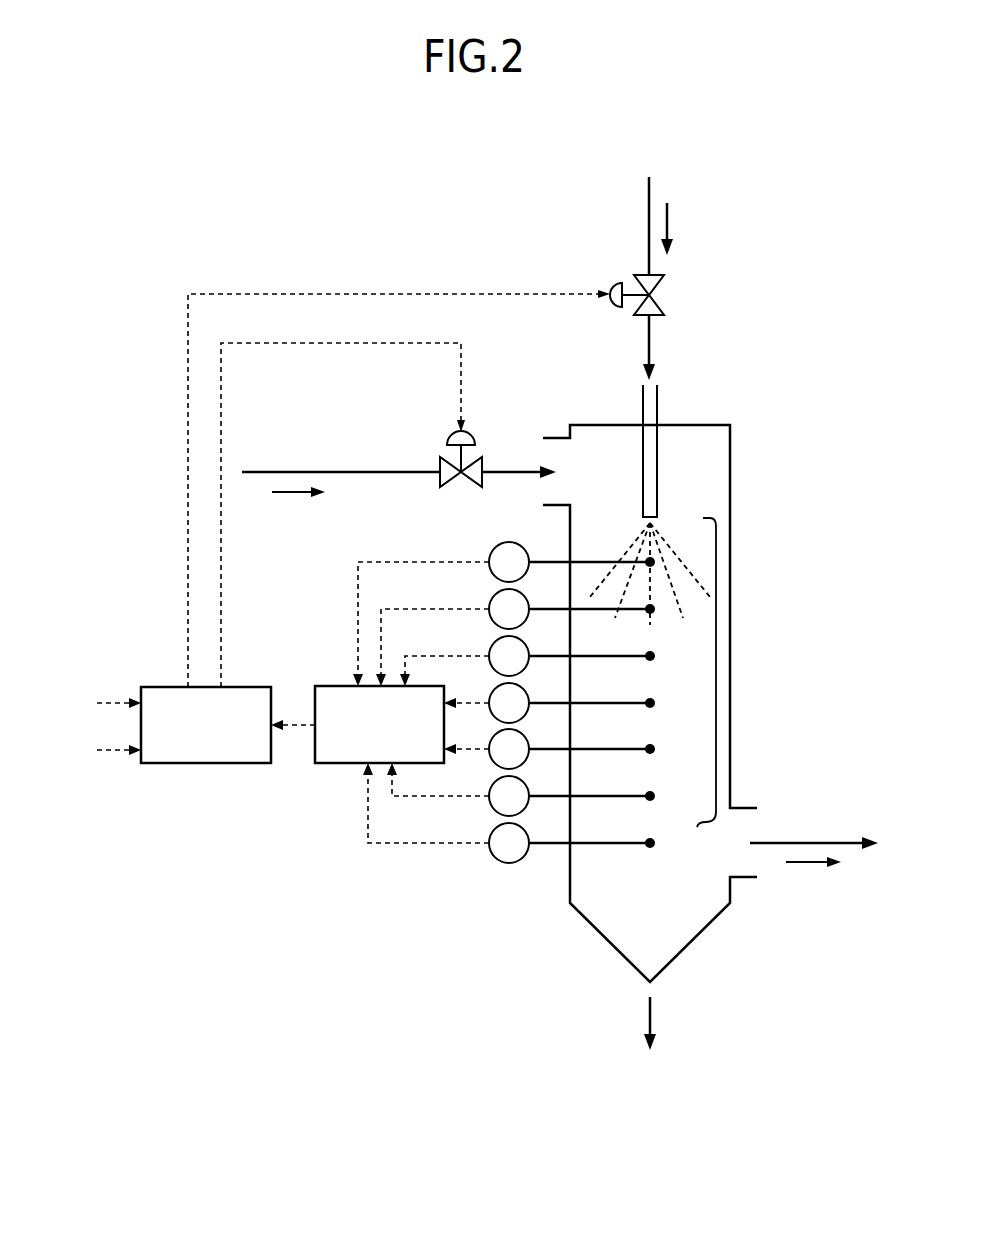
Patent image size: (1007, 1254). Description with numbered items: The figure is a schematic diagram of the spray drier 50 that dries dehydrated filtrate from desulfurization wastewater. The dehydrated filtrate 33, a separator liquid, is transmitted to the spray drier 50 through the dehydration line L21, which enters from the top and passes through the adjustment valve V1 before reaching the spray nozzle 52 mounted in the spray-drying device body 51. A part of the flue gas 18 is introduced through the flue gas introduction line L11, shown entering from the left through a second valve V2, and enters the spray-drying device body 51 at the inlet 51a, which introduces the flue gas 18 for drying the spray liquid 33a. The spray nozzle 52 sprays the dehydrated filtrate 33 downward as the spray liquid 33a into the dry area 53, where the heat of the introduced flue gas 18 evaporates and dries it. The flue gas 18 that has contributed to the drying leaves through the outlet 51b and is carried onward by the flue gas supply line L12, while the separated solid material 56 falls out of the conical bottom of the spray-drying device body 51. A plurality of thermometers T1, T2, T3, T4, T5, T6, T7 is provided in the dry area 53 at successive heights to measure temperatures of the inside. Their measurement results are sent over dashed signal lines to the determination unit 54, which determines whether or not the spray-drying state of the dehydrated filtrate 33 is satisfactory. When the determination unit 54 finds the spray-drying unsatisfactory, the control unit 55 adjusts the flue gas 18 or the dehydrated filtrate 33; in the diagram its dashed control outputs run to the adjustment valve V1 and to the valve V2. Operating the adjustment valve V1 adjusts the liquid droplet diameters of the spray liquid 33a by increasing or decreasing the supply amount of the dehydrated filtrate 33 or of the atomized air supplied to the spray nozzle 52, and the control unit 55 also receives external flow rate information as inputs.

The spray drier 50 is at (466, 234).
The dehydrated filtrate 33 is at (669, 226).
The dehydration line L21 is at (649, 221).
The adjustment valve V1 is at (614, 304).
The flue gas introduction line L11 is at (306, 472).
The second valve V2 is at (450, 437).
The flue gas 18 is at (290, 494).
The spray-drying device body 51 is at (731, 622).
The inlet 51a is at (545, 438).
The outlet 51b is at (744, 810).
The spray nozzle 52 is at (658, 476).
The spray liquid 33a is at (680, 546).
The dry area 53 is at (717, 672).
The flue gas supply line L12 is at (815, 841).
The separated solid material 56 is at (652, 1018).
The thermometer T1 is at (504, 614).
The thermometer T2 is at (515, 637).
The thermometer T3 is at (527, 661).
The thermometer T4 is at (549, 703).
The thermometer T5 is at (549, 749).
The thermometer T6 is at (521, 789).
The thermometer T7 is at (509, 813).
The determination unit 54 is at (333, 686).
The control unit 55 is at (244, 687).